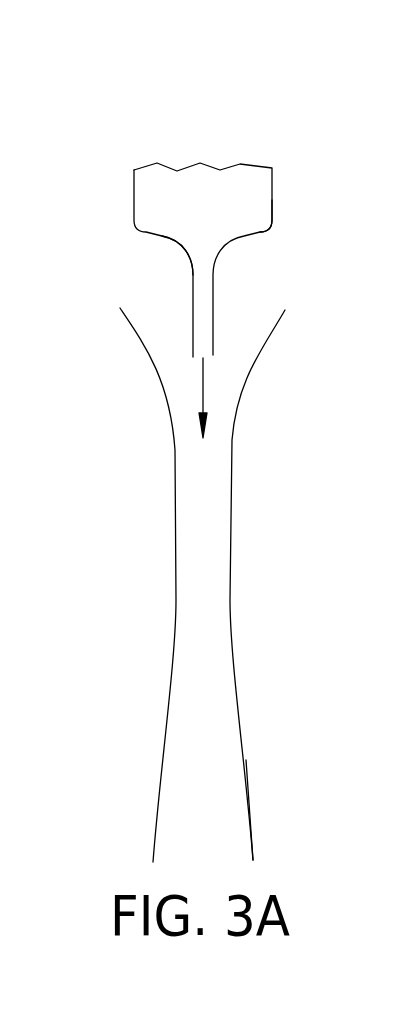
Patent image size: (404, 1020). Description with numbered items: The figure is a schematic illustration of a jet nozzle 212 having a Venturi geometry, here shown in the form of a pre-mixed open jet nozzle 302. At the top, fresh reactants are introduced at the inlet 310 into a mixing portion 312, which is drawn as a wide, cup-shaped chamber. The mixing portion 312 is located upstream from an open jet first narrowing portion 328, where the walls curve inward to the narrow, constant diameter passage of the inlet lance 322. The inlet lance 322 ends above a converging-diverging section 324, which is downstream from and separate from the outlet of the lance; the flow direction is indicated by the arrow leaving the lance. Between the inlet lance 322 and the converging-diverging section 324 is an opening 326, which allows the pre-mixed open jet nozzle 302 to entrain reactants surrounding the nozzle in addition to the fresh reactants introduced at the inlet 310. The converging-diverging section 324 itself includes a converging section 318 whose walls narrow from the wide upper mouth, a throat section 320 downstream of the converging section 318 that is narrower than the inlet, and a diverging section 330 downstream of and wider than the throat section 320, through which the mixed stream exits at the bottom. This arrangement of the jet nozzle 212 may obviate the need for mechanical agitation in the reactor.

The jet nozzle 212 is at (286, 100).
The pre-mixed open jet nozzle 302 is at (110, 110).
The inlet 310 is at (272, 185).
The mixing portion 312 is at (272, 222).
The converging section 318 is at (148, 357).
The throat section 320 is at (233, 430).
The inlet lance 322 is at (215, 338).
The converging-diverging section 324 is at (126, 518).
The opening 326 is at (126, 292).
The open jet first narrowing portion 328 is at (170, 249).
The diverging section 330 is at (249, 818).